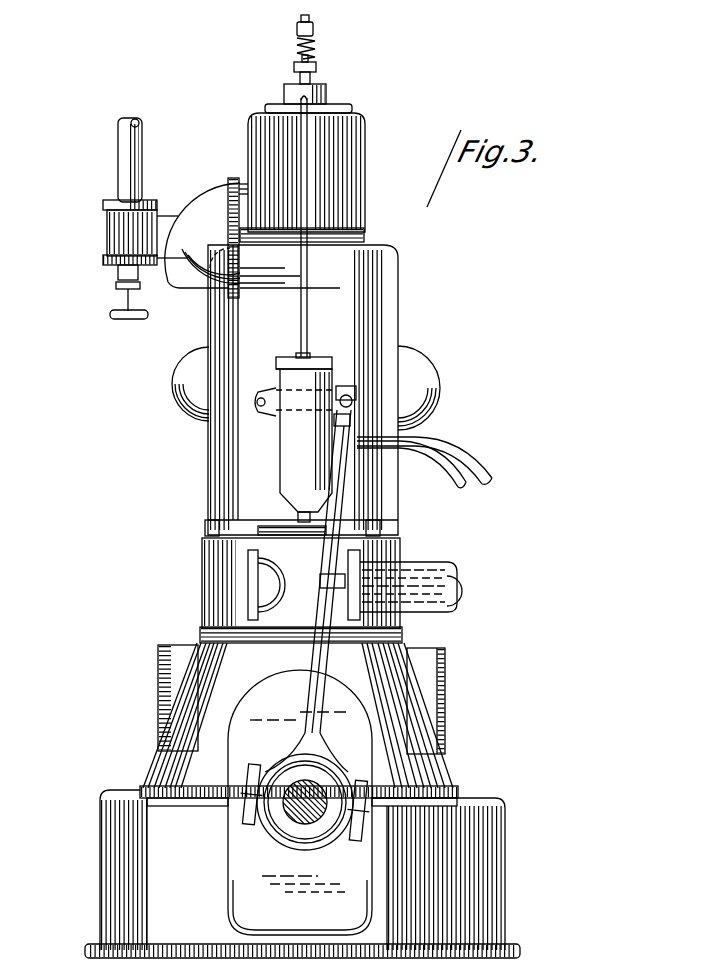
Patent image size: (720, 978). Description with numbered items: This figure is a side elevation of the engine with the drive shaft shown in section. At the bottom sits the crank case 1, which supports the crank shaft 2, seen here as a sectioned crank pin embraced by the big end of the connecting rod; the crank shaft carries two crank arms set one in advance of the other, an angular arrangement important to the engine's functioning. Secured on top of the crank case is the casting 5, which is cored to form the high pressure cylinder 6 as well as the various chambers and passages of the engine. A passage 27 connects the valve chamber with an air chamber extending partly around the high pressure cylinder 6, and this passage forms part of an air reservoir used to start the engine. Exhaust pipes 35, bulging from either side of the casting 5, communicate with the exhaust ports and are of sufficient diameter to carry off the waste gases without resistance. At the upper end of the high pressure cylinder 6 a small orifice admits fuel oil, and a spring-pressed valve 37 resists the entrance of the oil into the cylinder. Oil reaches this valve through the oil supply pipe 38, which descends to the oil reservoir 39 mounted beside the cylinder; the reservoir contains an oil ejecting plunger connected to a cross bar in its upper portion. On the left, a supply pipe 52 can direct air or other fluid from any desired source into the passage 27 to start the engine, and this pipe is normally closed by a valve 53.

The crank case 1 is at (198, 642).
The crank shaft 2 is at (292, 790).
The casting 5 is at (222, 335).
The high pressure cylinder 6 is at (258, 135).
The passage 27 is at (194, 258).
The exhaust pipes 35 is at (176, 390).
The spring-pressed valve 37 is at (313, 63).
The oil supply pipe 38 is at (302, 127).
The oil reservoir 39 is at (278, 470).
The supply pipe 52 is at (121, 160).
The valve 53 is at (117, 272).